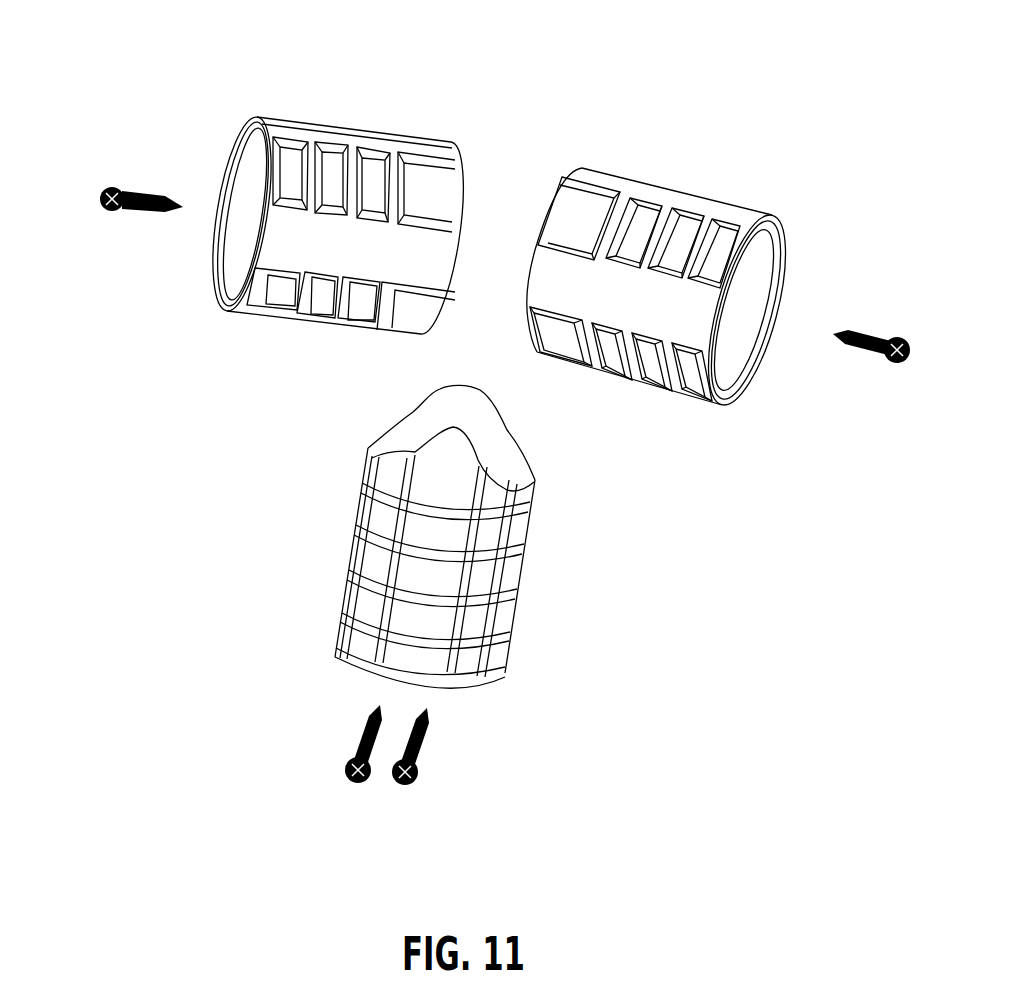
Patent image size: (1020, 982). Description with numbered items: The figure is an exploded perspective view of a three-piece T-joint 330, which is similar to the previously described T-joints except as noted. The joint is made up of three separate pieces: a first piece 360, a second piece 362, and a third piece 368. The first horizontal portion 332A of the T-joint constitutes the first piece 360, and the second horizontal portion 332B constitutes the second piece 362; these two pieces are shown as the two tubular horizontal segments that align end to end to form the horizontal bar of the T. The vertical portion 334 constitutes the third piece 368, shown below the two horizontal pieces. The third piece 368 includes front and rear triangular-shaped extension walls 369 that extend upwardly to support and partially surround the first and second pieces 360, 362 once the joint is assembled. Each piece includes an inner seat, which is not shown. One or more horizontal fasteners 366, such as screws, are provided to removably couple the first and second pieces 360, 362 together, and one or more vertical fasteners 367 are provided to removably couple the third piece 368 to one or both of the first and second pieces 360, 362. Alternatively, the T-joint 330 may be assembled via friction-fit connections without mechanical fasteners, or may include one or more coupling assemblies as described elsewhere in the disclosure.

The three-piece T-joint 330 is at (464, 433).
The first piece 360 is at (683, 308).
The second piece 362 is at (286, 276).
The horizontal fasteners 366 is at (138, 212).
The vertical fasteners 367 is at (345, 772).
The third piece 368 is at (481, 501).
The triangular-shaped extension walls 369 is at (476, 407).
The first horizontal portion 332A is at (718, 400).
The second horizontal portion 332B is at (312, 305).
The vertical portion 334 is at (385, 575).